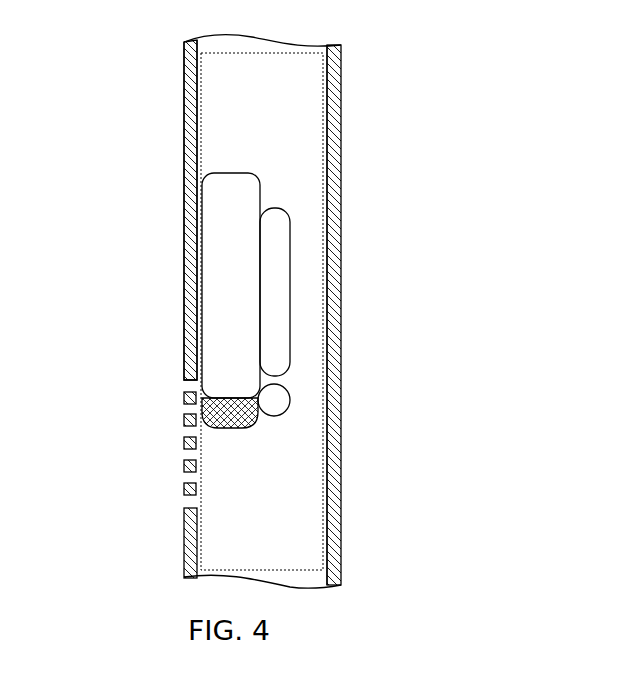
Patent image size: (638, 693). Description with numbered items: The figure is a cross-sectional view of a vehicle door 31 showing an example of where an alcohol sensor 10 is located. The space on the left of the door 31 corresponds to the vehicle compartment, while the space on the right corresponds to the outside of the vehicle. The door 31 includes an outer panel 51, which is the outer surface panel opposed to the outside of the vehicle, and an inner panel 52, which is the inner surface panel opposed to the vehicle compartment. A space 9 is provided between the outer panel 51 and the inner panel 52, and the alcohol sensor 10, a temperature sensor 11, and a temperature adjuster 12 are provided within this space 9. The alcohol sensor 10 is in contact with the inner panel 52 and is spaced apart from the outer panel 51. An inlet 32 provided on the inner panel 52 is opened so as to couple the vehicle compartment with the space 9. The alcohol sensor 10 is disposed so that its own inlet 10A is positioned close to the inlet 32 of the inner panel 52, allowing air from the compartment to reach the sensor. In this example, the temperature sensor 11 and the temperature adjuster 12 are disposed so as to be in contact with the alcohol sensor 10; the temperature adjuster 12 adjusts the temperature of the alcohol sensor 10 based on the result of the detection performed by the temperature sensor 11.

The space 9 is at (341, 110).
The door 31 is at (425, 57).
The outer panel 51 is at (341, 208).
The inlet 32 is at (167, 460).
The inner panel 52 is at (184, 212).
The alcohol sensor 10 is at (242, 292).
The temperature adjuster 12 is at (272, 350).
The temperature sensor 11 is at (270, 396).
The inlet 10A is at (231, 434).